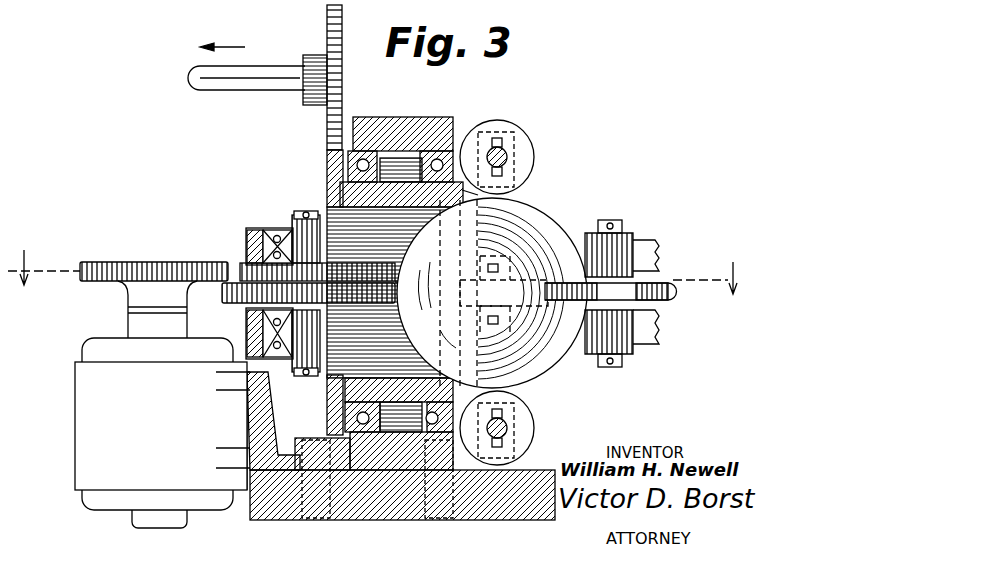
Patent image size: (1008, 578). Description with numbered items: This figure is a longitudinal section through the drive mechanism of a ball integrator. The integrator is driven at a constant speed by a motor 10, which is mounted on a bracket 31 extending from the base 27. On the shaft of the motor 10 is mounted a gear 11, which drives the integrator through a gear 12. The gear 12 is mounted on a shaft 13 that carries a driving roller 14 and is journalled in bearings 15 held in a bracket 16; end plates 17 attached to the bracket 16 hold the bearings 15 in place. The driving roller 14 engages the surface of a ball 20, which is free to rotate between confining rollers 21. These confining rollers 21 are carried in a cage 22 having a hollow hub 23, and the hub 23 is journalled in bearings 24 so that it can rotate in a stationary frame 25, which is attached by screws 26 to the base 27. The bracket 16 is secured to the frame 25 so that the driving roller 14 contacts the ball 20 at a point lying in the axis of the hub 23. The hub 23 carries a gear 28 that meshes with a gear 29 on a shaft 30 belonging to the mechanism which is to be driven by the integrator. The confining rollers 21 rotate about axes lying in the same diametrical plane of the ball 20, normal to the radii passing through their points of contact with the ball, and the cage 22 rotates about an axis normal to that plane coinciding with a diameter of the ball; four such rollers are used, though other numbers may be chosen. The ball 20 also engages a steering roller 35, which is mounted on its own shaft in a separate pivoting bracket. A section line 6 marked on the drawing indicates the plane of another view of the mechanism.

The section line 6- 6 is at (378, 273).
The motor 10 is at (162, 404).
The gear 11 is at (148, 270).
The gear 12 is at (242, 266).
The shaft 13 is at (300, 220).
The driving roller 14 is at (224, 293).
The bearings 15 is at (263, 248).
The bracket 16 is at (256, 235).
The end plates 17 is at (252, 243).
The ball 20 is at (492, 293).
The confining rollers 21 is at (533, 150).
The cage 22 is at (492, 123).
The hollow hub 23 is at (340, 200).
The bearings 24 is at (458, 150).
The stationary frame 25 is at (406, 128).
The screws 26 is at (318, 440).
The base 27 is at (548, 470).
The gear 28 is at (327, 160).
The gear 29 is at (327, 22).
The shaft 30 is at (238, 82).
The bracket 31 is at (250, 498).
The steering roller 35 is at (676, 294).